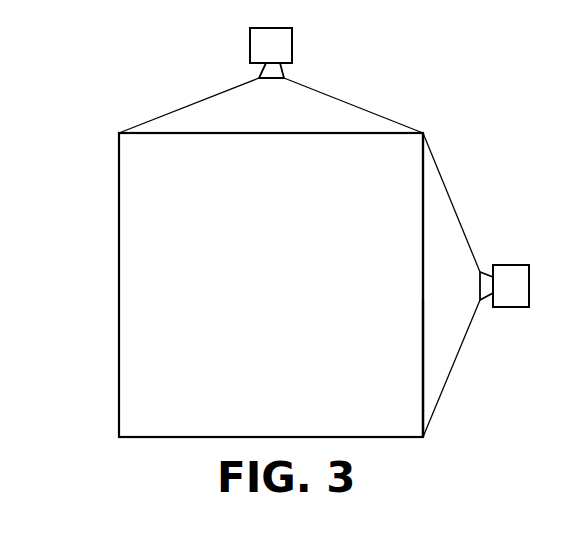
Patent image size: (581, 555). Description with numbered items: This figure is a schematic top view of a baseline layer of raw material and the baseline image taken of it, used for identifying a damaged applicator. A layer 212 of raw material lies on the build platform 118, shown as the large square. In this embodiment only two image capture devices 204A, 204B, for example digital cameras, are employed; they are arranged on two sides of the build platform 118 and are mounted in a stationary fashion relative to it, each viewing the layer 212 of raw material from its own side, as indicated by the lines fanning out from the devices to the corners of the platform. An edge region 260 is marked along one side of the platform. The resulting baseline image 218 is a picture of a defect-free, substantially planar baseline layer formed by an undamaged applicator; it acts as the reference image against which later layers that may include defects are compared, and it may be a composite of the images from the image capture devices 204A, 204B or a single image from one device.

The layer of raw material 212 is at (152, 352).
The build platform 118 is at (337, 437).
The image capture device 204B is at (270, 45).
The image capture device 204A is at (512, 287).
The screen edge 260 is at (423, 178).
The baseline image 218 is at (393, 413).